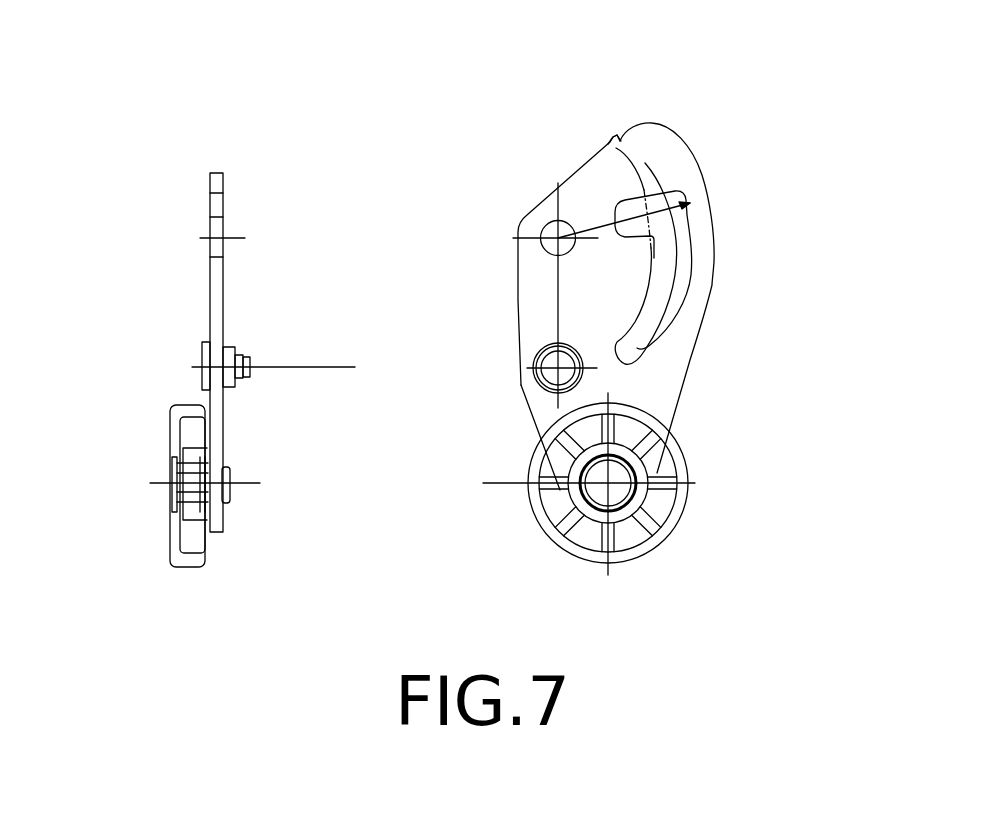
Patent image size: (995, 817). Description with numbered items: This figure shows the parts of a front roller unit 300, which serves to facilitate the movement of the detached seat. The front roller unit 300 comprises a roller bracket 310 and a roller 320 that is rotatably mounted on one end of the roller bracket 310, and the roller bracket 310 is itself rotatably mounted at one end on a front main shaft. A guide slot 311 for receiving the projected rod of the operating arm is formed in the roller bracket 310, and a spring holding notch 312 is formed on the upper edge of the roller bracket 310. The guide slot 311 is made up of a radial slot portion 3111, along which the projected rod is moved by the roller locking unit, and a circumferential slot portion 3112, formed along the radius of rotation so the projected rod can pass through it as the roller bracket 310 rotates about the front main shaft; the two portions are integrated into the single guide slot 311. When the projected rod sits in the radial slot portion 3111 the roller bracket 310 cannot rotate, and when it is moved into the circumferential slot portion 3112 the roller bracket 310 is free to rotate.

The front roller unit 300 is at (740, 513).
The roller bracket 310 is at (211, 303).
The guide slot 311 is at (440, 90).
The radial slot portion 3111 is at (616, 138).
The circumferential slot portion 3112 is at (643, 290).
The spring holding notch 312 is at (618, 136).
The roller 320 is at (563, 543).